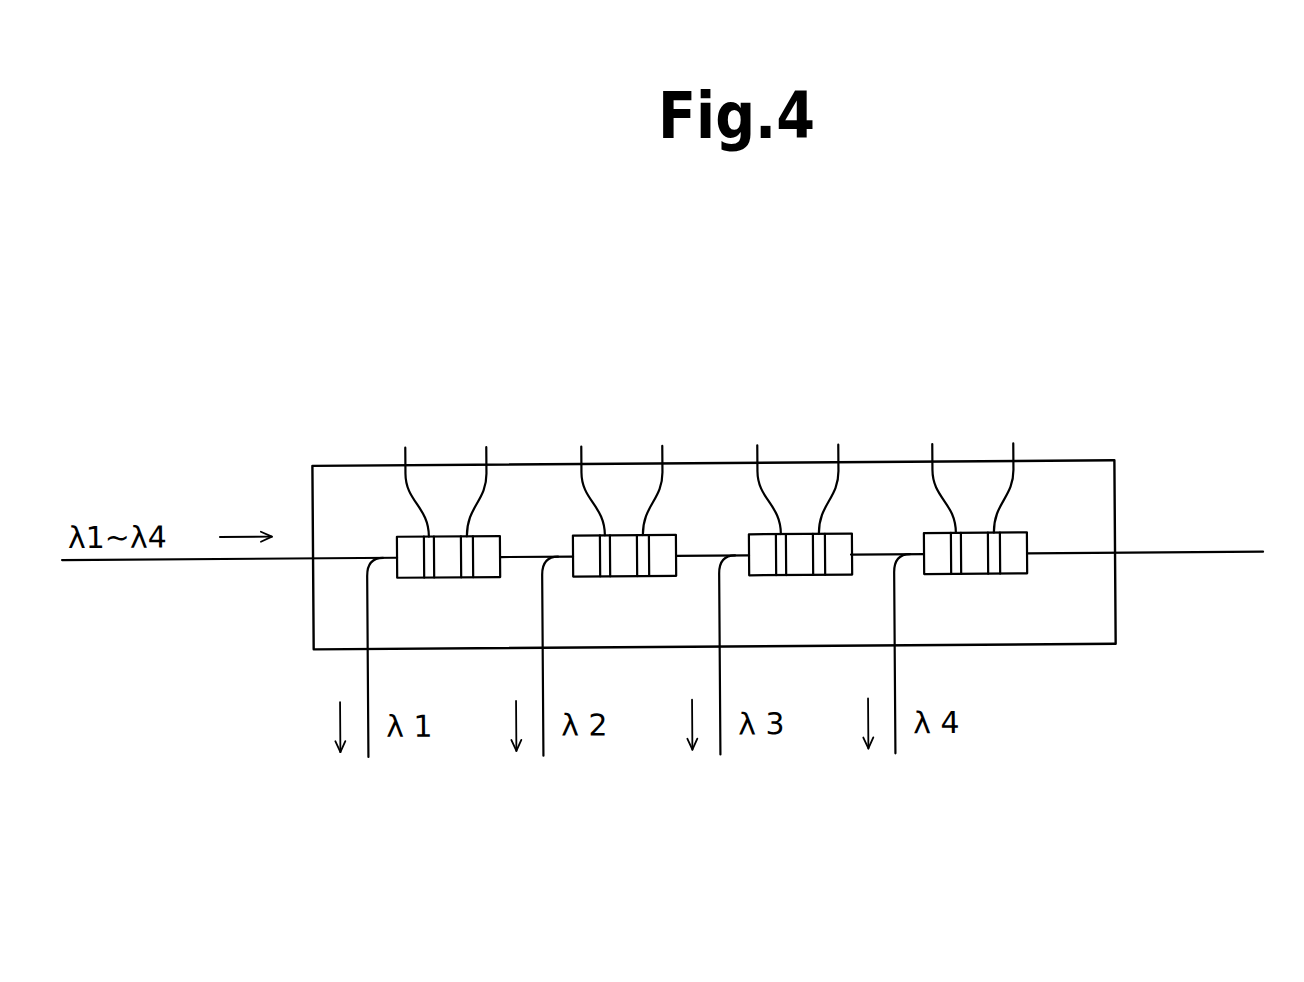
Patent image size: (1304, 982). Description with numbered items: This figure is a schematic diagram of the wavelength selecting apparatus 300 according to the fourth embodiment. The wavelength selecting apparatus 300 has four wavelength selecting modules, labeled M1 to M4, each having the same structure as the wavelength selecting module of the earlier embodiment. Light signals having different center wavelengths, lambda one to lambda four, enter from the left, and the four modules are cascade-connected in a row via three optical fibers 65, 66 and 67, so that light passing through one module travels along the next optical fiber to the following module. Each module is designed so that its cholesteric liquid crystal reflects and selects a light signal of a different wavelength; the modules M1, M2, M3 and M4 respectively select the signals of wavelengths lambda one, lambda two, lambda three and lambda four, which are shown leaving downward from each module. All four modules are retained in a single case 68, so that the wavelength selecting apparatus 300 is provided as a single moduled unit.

The wavelength selecting apparatus 300 is at (1132, 336).
The case 68 is at (1117, 478).
The optical fiber 65 is at (520, 557).
The optical fiber 66 is at (700, 557).
The optical fiber 67 is at (873, 557).